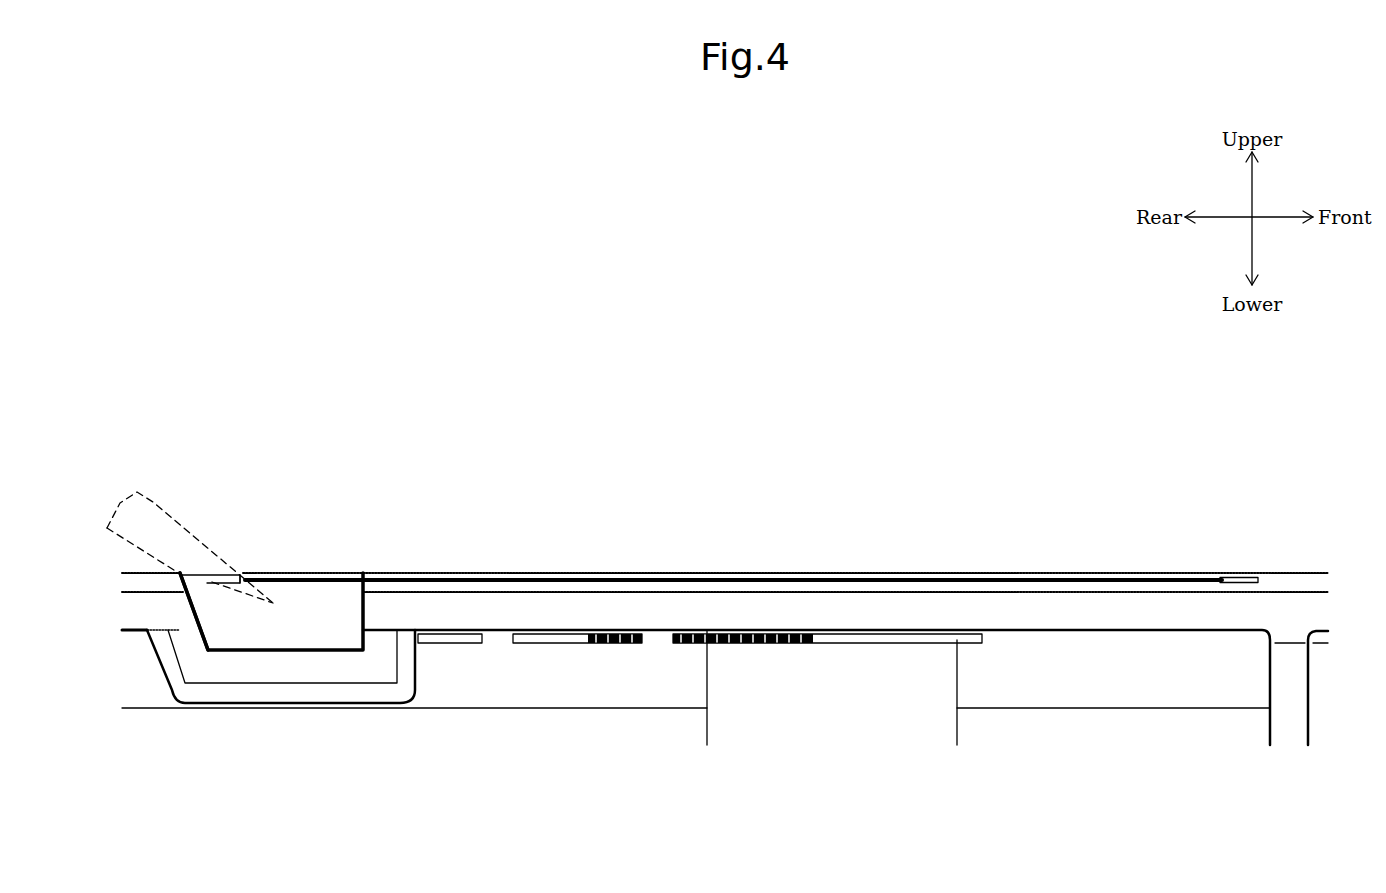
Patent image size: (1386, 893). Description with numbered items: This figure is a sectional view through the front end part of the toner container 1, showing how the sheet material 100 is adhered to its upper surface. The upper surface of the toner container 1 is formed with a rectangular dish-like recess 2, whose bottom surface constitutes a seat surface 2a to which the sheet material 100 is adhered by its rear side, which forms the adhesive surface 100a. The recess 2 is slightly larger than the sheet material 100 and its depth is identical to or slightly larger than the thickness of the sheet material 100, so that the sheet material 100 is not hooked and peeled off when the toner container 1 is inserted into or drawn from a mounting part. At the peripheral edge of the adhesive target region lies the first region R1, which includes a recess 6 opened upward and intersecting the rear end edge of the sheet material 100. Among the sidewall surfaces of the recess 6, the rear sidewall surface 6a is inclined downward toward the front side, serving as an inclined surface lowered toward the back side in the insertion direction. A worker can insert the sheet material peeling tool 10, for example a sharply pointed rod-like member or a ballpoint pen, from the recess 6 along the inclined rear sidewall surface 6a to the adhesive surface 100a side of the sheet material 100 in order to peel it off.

The toner container 1 is at (186, 480).
The sheet material peeling tool 10 is at (152, 492).
The recess 2 is at (227, 568).
The seat surface 2a is at (242, 580).
The recess 6 is at (312, 608).
The rear sidewall surface 6a is at (196, 605).
The first region R1 is at (348, 582).
The sheet material 100 is at (628, 573).
The adhesive surface 100a is at (657, 580).